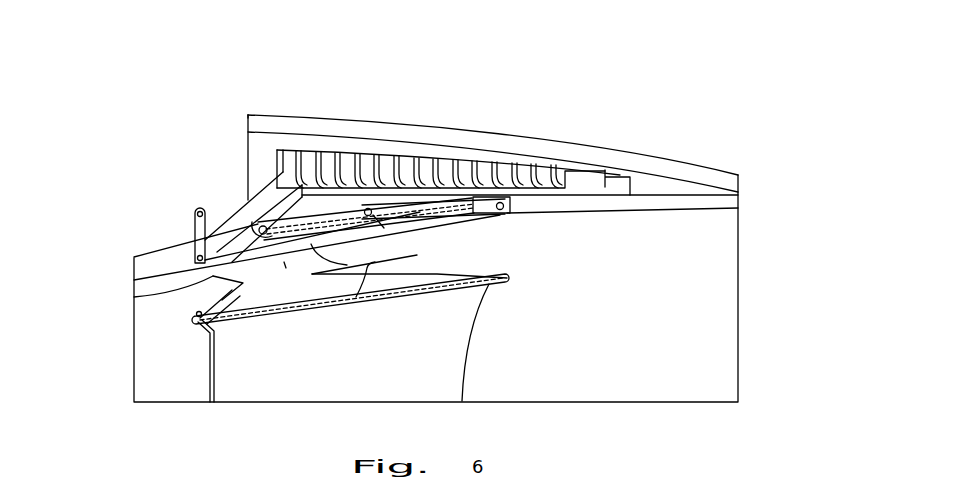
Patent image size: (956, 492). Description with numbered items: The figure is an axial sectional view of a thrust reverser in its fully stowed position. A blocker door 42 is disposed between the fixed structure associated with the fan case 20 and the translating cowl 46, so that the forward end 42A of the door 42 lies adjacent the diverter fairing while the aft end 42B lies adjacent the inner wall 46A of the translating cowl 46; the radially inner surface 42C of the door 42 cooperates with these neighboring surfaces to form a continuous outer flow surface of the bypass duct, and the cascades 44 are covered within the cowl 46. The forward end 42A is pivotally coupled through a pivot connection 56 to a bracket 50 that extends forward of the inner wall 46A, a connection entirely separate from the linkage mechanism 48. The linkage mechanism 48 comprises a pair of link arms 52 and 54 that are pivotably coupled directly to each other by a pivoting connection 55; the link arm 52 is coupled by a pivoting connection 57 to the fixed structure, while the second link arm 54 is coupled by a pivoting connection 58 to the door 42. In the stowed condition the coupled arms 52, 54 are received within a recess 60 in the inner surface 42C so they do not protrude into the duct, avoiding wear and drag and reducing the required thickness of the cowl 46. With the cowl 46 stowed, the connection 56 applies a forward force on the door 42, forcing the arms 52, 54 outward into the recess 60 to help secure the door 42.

The fan case 20 is at (140, 270).
The blocker door 42 is at (322, 222).
The forward end of blocker door 42A is at (215, 282).
The aft end of blocker door 42B is at (522, 202).
The radially inner surface of blocker door 42C is at (262, 265).
The cascades 44 is at (354, 146).
The translating cowl 46 is at (709, 163).
The inner wall of translating cowl 46A is at (638, 203).
The linkage mechanism 48 is at (323, 318).
The bracket 50 is at (282, 223).
The link arm 52 is at (372, 258).
The second link arm 54 is at (428, 213).
The pivoting connection 55 is at (500, 203).
The pivot connection 56 is at (262, 228).
The pivoting connection 57 is at (198, 258).
The pivoting connection 58 is at (369, 210).
The recess 60 is at (284, 262).